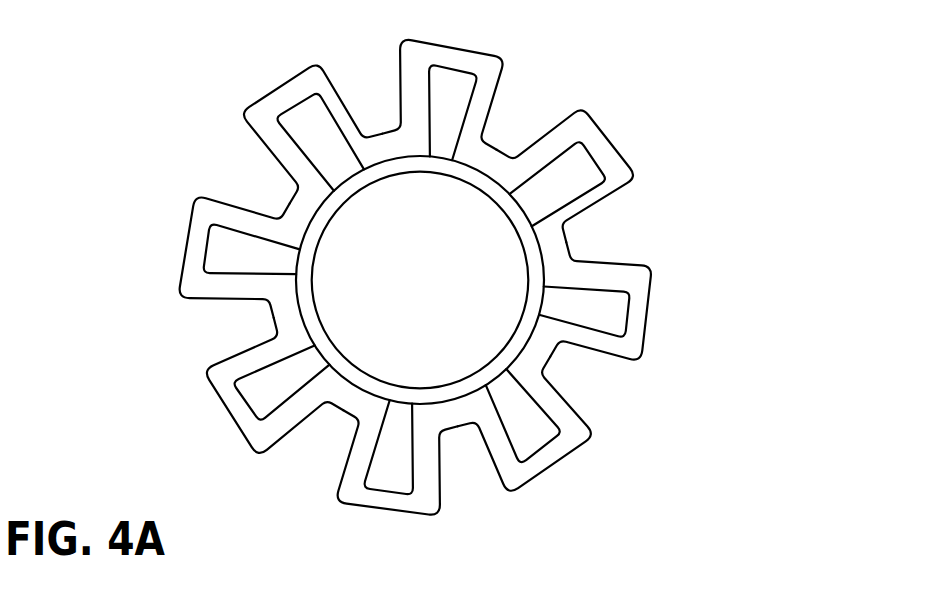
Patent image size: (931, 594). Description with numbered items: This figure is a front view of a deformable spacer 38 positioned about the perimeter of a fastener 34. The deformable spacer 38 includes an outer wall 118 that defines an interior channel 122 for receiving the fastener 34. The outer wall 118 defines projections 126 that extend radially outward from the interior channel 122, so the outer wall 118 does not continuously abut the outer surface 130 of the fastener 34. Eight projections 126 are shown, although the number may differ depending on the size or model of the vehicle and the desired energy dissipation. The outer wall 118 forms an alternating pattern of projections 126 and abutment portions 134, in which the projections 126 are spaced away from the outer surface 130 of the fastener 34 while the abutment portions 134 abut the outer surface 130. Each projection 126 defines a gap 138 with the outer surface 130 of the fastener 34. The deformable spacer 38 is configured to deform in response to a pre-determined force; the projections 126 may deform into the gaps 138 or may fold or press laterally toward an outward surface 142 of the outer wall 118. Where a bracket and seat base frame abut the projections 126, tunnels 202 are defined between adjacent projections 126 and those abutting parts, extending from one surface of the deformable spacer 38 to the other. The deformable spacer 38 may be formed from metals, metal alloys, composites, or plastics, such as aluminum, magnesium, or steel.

The fastener 34 is at (437, 338).
The deformable spacer 38 is at (507, 58).
The outer wall 118 is at (615, 165).
The interior channel 122 is at (543, 303).
The projections 126 is at (605, 375).
The outer surface 130 is at (297, 261).
The abutment portions 134 is at (268, 313).
The gap 138 is at (398, 448).
The outward surface 142 is at (183, 220).
The tunnels 202 is at (598, 245).